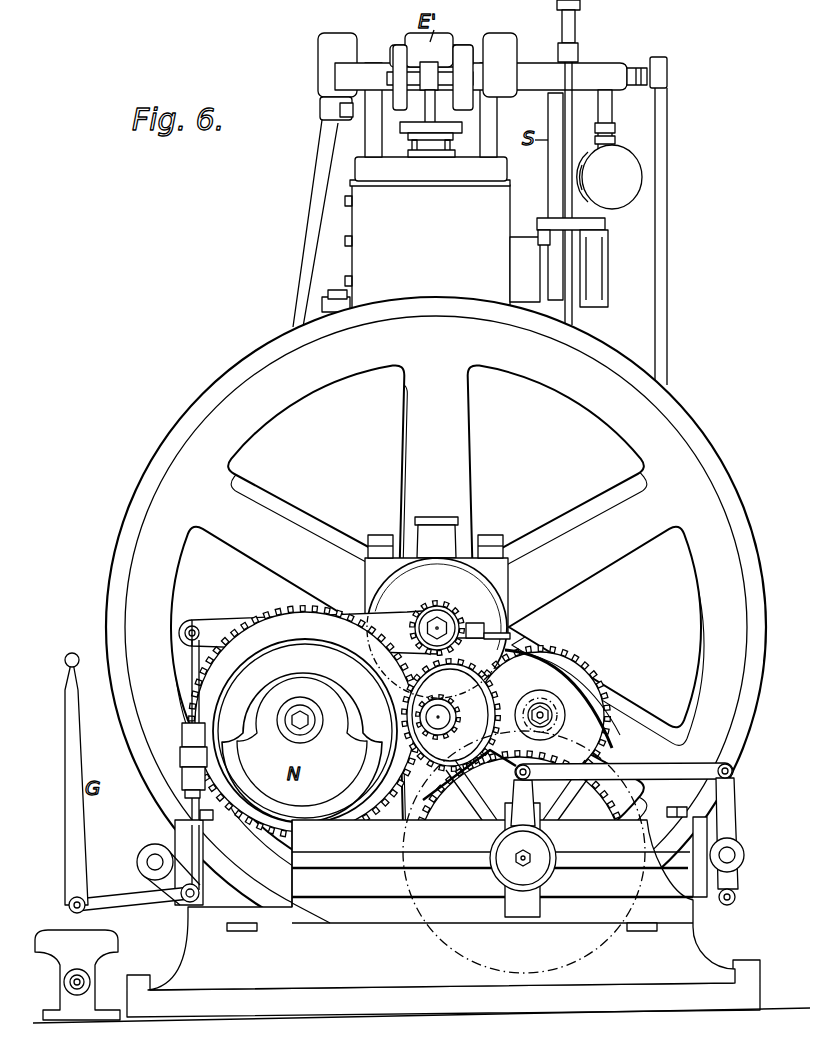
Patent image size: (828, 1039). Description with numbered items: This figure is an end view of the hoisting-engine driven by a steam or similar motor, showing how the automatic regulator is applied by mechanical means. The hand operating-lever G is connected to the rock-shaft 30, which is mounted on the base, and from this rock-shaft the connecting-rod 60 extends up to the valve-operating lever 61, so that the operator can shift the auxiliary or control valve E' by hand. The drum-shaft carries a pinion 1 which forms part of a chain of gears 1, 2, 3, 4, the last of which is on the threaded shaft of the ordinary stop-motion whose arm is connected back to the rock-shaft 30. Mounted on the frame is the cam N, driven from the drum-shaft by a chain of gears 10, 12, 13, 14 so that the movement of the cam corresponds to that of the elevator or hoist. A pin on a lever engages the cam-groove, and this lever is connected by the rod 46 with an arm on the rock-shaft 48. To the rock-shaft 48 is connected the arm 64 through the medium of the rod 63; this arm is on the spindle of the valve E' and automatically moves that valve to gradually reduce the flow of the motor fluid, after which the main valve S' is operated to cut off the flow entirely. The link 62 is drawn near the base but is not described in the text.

The pinion 1 is at (500, 603).
The gear 2 is at (578, 665).
The gear 3 is at (560, 726).
The gear 4 is at (421, 792).
The gear 10 is at (449, 609).
The gear 12 is at (534, 707).
The gear 13 is at (438, 730).
The gear 14 is at (278, 838).
The rock-shaft 30 is at (735, 856).
The rod 46 is at (308, 642).
The rock-shaft 48 is at (148, 858).
The connecting-rod 60 is at (672, 221).
The valve-operating lever 61 is at (613, 60).
The link 62 is at (175, 908).
The rod 63 is at (306, 262).
The arm 64 is at (345, 123).